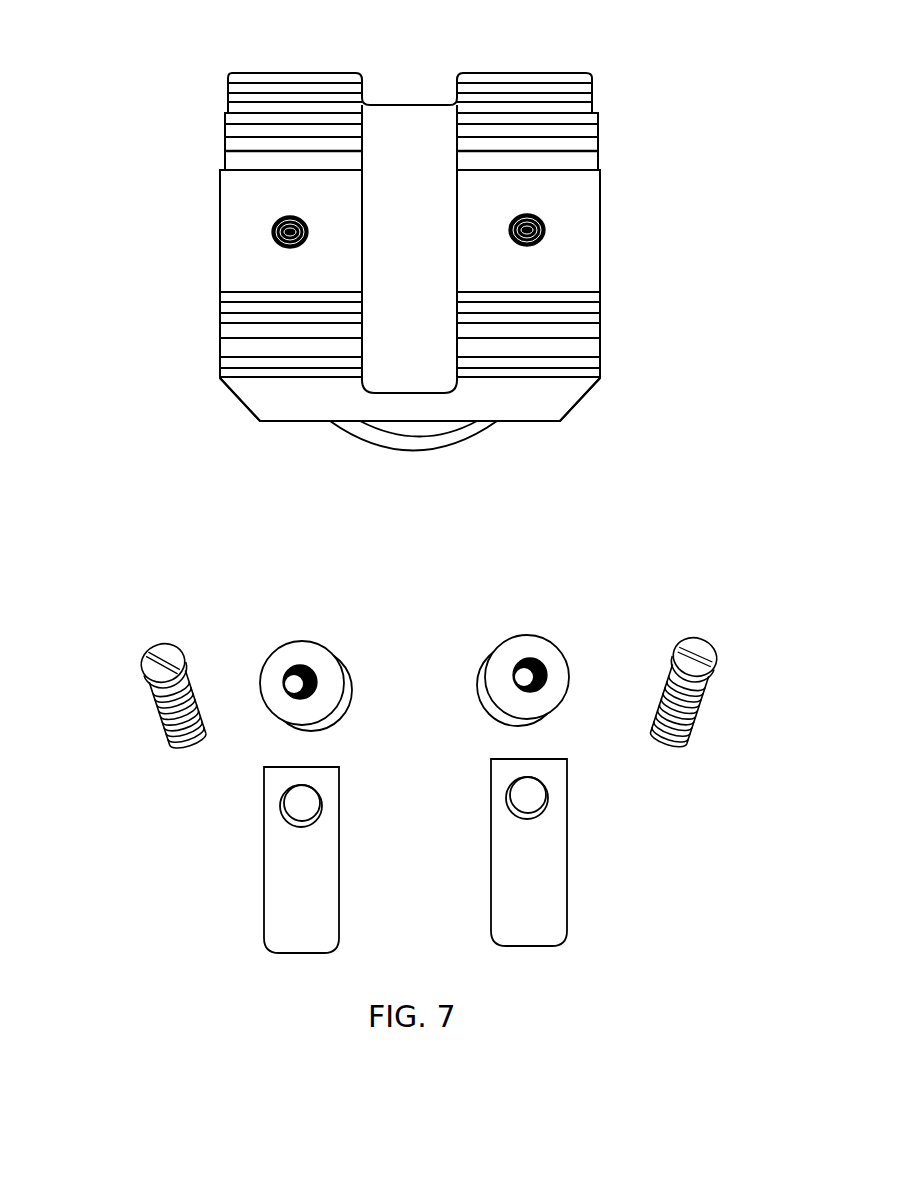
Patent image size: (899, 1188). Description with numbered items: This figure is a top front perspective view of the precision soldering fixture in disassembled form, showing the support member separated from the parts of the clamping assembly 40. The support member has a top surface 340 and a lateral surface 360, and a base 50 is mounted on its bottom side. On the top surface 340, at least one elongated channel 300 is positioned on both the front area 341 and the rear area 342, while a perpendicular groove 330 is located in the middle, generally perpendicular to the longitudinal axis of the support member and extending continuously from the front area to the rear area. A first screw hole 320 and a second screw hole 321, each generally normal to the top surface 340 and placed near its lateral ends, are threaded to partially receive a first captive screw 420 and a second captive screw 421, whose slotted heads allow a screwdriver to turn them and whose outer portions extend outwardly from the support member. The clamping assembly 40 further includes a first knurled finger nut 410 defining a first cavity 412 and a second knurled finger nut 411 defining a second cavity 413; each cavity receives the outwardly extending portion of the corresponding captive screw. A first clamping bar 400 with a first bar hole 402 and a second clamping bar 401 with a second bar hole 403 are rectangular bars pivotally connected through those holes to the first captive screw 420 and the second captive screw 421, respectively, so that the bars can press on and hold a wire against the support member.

The elongated channel 300 is at (234, 95).
The perpendicular groove 330 is at (415, 92).
The top surface 340 is at (233, 200).
The front area 341 is at (700, 75).
The rear area 342 is at (700, 227).
The first screw hole 320 is at (275, 232).
The second screw hole 321 is at (545, 230).
The lateral surface 360 is at (563, 395).
The base 50 is at (487, 423).
The clamping assembly 40 is at (737, 600).
The first knurled finger nut 410 is at (292, 670).
The second knurled finger nut 411 is at (571, 668).
The first cavity 412 is at (313, 682).
The second cavity 413 is at (532, 680).
The first captive screw 420 is at (140, 672).
The second captive screw 421 is at (717, 665).
The first clamping bar 400 is at (246, 860).
The second clamping bar 401 is at (581, 852).
The first bar hole 402 is at (302, 805).
The second bar hole 403 is at (528, 795).